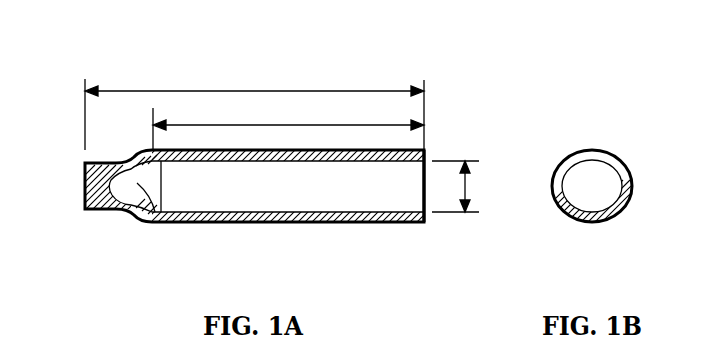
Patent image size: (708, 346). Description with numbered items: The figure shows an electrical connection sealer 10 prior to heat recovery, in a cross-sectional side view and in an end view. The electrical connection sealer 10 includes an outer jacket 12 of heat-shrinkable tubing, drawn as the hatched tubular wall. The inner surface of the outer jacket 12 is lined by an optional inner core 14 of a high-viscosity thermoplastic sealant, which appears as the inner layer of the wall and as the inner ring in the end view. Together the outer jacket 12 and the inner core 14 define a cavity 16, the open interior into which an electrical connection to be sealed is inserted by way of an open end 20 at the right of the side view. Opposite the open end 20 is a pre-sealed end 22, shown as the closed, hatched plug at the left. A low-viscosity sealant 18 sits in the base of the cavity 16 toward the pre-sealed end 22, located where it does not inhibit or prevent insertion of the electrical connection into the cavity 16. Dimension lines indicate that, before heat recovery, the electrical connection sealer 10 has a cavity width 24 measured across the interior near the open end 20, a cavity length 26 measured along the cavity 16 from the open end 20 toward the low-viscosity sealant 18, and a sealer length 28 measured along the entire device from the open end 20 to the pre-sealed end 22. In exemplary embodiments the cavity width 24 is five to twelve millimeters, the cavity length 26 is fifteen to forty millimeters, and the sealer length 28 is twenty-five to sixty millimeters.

In FIG. 1A, the electrical connection sealer 10 is at (453, 73).
In FIG. 1A, the outer jacket 12 is at (280, 222).
In FIG. 1B, the outer jacket 12 is at (608, 153).
In FIG. 1A, the inner core 14 is at (227, 163).
In FIG. 1B, the inner core 14 is at (570, 203).
In FIG. 1A, the cavity 16 is at (362, 183).
In FIG. 1A, the low-viscosity sealant 18 is at (160, 214).
In FIG. 1B, the low-viscosity sealant 18 is at (597, 198).
In FIG. 1A, the open end 20 is at (427, 222).
In FIG. 1A, the pre-sealed end 22 is at (84, 194).
In FIG. 1A, the cavity width 24 is at (465, 187).
In FIG. 1A, the cavity length 26 is at (285, 125).
In FIG. 1A, the sealer length 28 is at (253, 91).